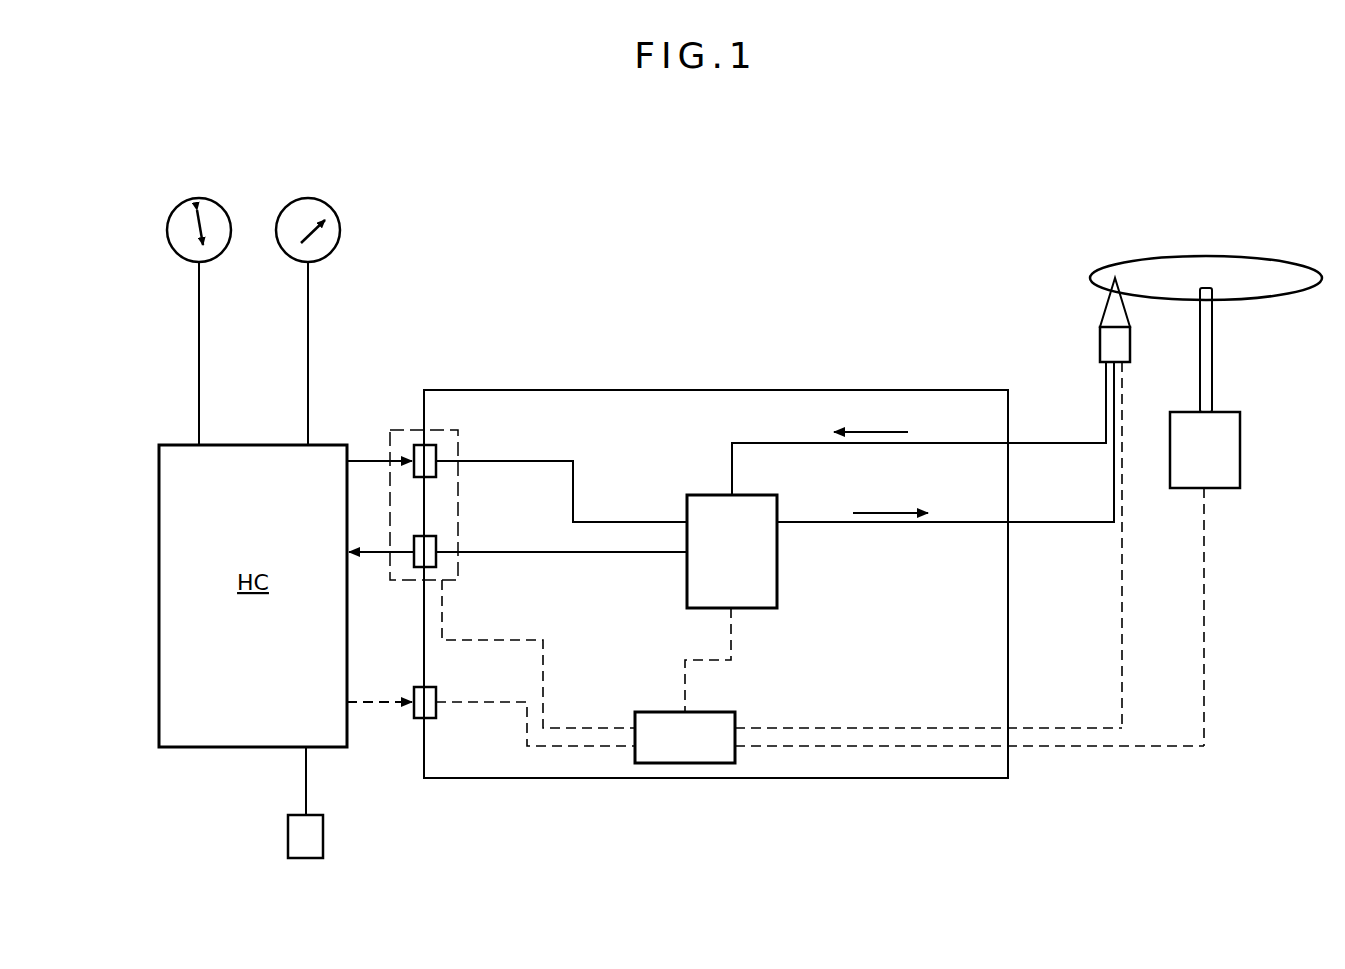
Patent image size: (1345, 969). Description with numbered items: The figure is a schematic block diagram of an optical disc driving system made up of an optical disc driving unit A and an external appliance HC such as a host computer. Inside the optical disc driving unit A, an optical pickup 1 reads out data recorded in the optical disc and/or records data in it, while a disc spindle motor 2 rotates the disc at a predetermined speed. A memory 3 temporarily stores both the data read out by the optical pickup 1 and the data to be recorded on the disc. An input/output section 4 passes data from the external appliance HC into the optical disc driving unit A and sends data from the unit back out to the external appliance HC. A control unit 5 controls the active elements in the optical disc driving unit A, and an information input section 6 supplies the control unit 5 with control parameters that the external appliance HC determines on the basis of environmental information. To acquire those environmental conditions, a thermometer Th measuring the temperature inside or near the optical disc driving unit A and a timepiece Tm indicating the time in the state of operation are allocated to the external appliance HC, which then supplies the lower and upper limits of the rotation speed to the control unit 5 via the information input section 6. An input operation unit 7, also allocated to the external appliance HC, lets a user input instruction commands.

The optical pickup 1 is at (1100, 345).
The disc spindle motor 2 is at (1240, 450).
The memory 3 is at (708, 495).
The input/output section 4 is at (405, 430).
The control unit 5 is at (686, 763).
The information input section 6 is at (418, 720).
The input operation unit 7 is at (288, 836).
The optical disc driving unit A is at (766, 244).
The timepiece Tm is at (200, 198).
The thermometer Th is at (310, 198).